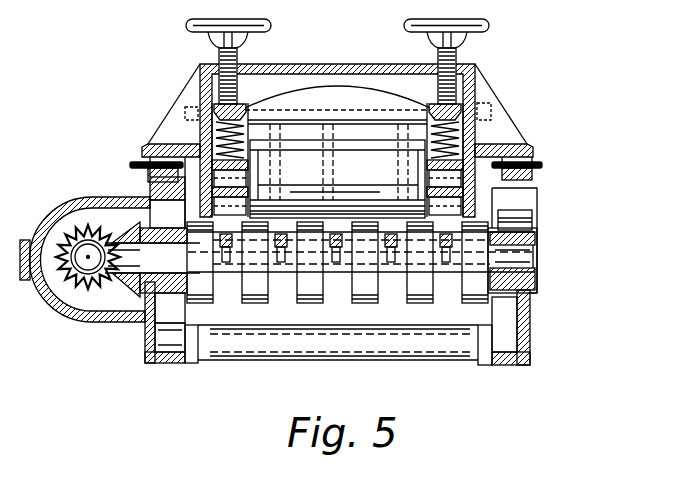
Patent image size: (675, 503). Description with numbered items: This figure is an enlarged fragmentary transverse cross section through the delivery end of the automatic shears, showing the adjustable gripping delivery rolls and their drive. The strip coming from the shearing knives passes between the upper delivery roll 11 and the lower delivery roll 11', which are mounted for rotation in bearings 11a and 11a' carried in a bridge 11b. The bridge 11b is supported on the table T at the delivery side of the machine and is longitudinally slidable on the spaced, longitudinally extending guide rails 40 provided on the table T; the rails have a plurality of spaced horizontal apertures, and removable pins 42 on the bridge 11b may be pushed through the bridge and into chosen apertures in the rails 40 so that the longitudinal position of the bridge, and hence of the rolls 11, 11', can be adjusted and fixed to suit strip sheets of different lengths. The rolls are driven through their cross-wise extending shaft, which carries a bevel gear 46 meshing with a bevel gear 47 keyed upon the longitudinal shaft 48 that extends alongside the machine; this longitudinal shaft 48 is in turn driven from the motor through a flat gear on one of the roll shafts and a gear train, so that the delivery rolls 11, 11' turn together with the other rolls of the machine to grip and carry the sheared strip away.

The bridge 11b is at (323, 64).
The upper delivery roll 11 is at (338, 152).
The bearing 11a is at (535, 205).
The bearing 11a' is at (549, 260).
The lower delivery roll 11' is at (361, 274).
The guide rail 40 is at (141, 146).
The removable pin 42 is at (130, 165).
The longitudinal shaft 48 is at (70, 233).
The bevel gear 47 is at (77, 290).
The bevel gear 46 is at (133, 283).
The table T is at (145, 352).